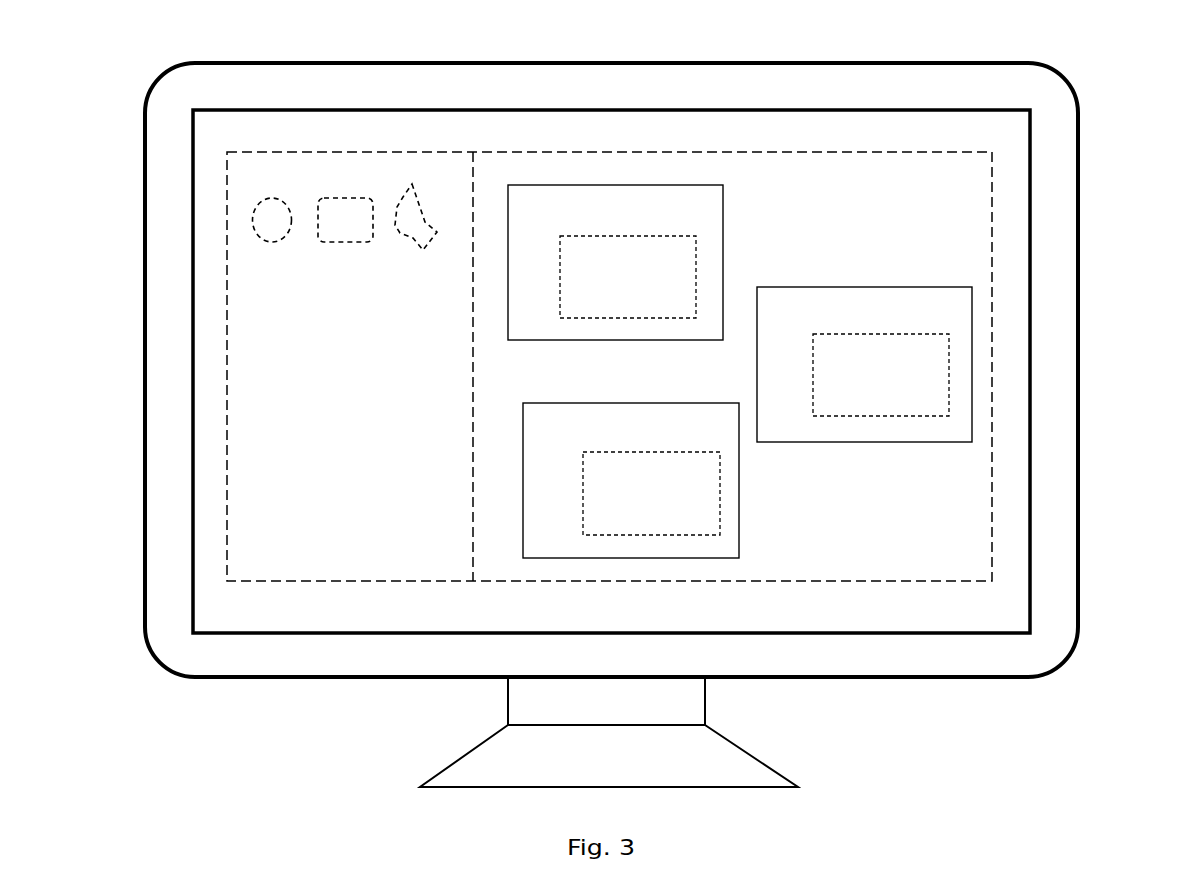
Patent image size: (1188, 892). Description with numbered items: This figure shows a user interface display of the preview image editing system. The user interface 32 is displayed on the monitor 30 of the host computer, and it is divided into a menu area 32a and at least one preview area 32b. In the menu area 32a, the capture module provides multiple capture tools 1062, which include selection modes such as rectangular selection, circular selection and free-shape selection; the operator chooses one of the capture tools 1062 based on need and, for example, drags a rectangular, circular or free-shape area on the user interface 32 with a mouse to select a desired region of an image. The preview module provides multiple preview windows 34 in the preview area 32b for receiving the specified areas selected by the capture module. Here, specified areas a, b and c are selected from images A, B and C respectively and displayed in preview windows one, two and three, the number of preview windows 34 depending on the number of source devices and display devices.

The monitor 30 is at (143, 185).
The user interface 32 is at (998, 229).
The menu area 32a is at (342, 384).
The preview area 32b is at (747, 445).
The preview window 34 is at (765, 372).
The capture tool 1062 is at (273, 192).